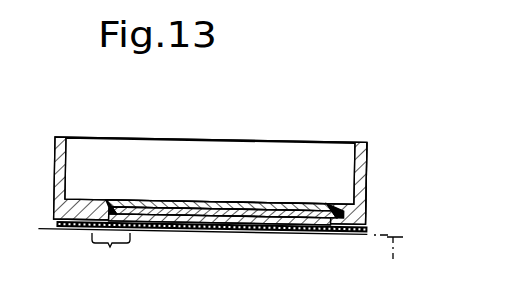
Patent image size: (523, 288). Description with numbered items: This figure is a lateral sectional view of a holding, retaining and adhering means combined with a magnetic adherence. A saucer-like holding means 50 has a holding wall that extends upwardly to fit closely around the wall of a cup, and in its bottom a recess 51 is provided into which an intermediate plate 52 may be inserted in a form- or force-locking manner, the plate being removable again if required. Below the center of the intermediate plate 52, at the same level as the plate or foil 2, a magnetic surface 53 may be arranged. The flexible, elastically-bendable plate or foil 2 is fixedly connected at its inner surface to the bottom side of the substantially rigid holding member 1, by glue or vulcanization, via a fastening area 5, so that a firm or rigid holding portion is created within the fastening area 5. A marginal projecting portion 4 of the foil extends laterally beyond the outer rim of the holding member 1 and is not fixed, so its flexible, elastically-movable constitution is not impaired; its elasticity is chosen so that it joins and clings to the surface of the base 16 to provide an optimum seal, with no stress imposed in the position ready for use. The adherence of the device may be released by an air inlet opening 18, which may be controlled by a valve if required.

The saucer-like holding means 50 is at (367, 141).
The recess 51 is at (186, 206).
The intermediate plate 52 is at (252, 211).
The magnetic surface 53 is at (216, 232).
The fastening area 5 is at (137, 215).
The holding member 1 is at (368, 212).
The plate or foil 2 is at (368, 227).
The marginal projecting portion 4 is at (87, 232).
The air inlet opening 18 is at (110, 251).
The base 16 is at (385, 242).